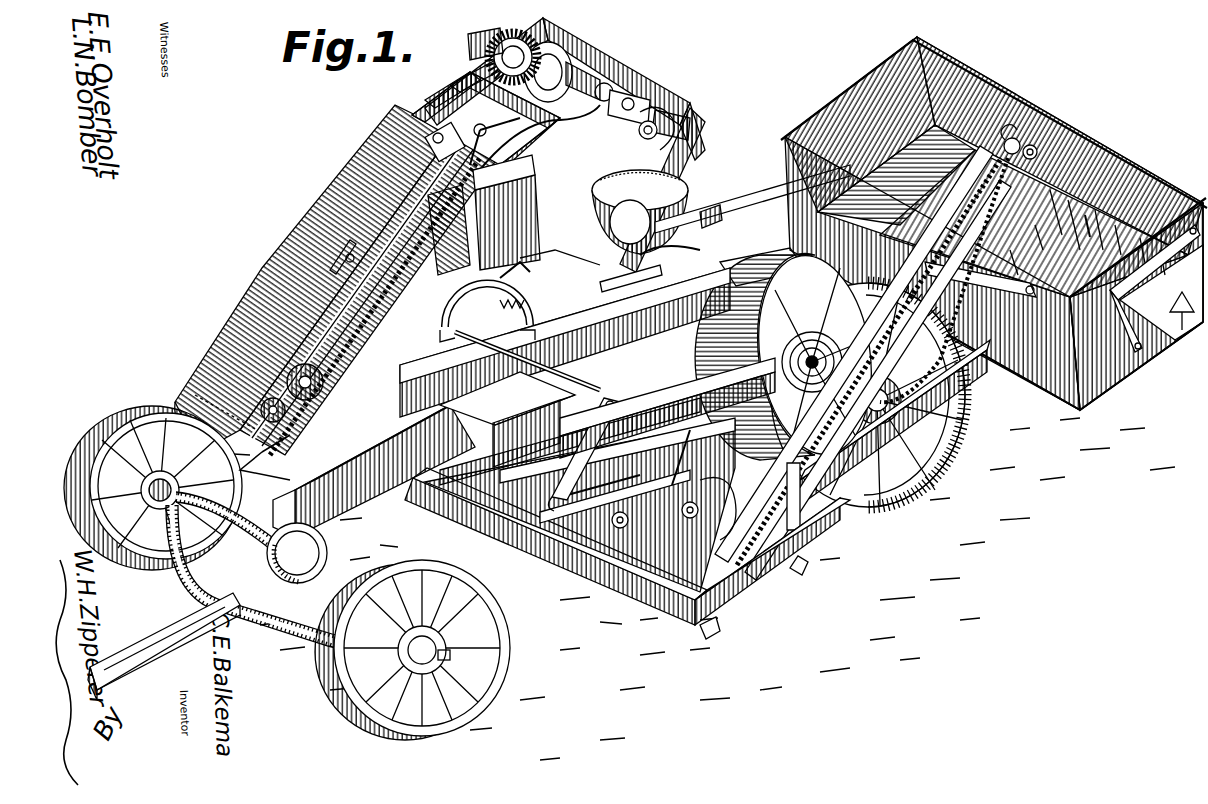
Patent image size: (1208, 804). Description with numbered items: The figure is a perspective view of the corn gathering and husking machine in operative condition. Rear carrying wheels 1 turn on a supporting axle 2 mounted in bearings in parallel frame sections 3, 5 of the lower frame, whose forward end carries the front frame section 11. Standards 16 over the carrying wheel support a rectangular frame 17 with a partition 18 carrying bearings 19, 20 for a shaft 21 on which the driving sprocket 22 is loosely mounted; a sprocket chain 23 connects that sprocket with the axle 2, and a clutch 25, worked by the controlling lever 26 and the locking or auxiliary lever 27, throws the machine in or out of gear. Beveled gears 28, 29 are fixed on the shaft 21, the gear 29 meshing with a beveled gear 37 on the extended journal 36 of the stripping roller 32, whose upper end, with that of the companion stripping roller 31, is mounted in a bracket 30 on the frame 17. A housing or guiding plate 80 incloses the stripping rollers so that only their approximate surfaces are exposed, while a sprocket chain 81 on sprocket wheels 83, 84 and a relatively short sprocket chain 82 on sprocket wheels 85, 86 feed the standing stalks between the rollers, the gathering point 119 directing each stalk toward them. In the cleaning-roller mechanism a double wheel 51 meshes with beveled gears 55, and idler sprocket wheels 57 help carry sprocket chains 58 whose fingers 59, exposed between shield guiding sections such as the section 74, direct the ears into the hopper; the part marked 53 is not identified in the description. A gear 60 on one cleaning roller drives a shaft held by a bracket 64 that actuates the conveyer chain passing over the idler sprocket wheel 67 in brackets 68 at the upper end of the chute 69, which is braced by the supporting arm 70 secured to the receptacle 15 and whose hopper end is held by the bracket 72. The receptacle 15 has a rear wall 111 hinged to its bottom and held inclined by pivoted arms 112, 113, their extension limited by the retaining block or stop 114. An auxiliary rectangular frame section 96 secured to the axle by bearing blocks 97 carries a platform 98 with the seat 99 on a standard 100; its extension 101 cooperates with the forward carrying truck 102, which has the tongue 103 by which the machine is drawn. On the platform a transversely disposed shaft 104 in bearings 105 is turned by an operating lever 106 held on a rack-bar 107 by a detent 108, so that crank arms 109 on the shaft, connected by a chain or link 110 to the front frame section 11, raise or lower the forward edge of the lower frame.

The rear carrying wheels 1 is at (789, 354).
The supporting axle 2 is at (617, 240).
The parallel frame section 3 is at (990, 370).
The parallel frame section 5 is at (756, 212).
The front frame section 11 is at (512, 532).
The receptacle 15 is at (852, 126).
The standards 16 is at (695, 162).
The rectangular frame 17 is at (627, 90).
The partition or intermediate section 18 is at (585, 62).
The bearing 19 is at (660, 126).
The bearing 20 is at (478, 40).
The shaft 21 is at (655, 108).
The driving sprocket 22 is at (632, 98).
The sprocket chain 23 is at (672, 112).
The clutch 25 is at (606, 82).
The controlling lever 26 is at (548, 162).
The locking or auxiliary lever 27 is at (506, 212).
The beveled gear 28 is at (552, 44).
The beveled gear 29 is at (515, 33).
The bracket 30 is at (486, 122).
The stripping roller 31 is at (395, 190).
The stripping roller 32 is at (400, 150).
The extended journal 36 is at (445, 98).
The beveled gear 37 is at (475, 80).
The double wheel 51 is at (628, 510).
The cross bar 53 is at (615, 491).
The beveled gears 55 is at (600, 489).
The idler sprocket wheels 57 is at (709, 508).
The sprocket chains 58 is at (580, 495).
The fingers or teeth 59 is at (617, 450).
The gear 60 is at (675, 612).
The bracket 64 is at (740, 630).
The idler sprocket wheel 67 is at (1022, 136).
The brackets 68 is at (1038, 150).
The chute 69 is at (915, 243).
The brace or supporting arm 70 is at (980, 283).
The bracket 72 is at (696, 628).
The guiding section 74 is at (680, 460).
The housing or guiding plate 80 is at (330, 270).
The sprocket chain 81 is at (355, 240).
The sprocket chain 82 is at (272, 458).
The sprocket wheel 83 is at (345, 255).
The sprocket wheel 84 is at (225, 367).
The sprocket wheel 85 is at (306, 402).
The sprocket wheel 86 is at (276, 424).
The rectangular frame section 96 is at (667, 408).
The bearing blocks or brackets 97 is at (670, 259).
The platform 98 is at (565, 342).
The seat 99 is at (640, 187).
The standard 100 is at (520, 306).
The extension 101 is at (374, 466).
The forward carrying truck 102 is at (268, 553).
The tongue or draft appliance 103 is at (158, 655).
The transversely disposed shaft 104 is at (536, 322).
The bearings 105 is at (552, 413).
The operating lever 106 is at (476, 292).
The rack-bar 107 is at (524, 288).
The detent 108 is at (631, 281).
The crank arms 109 is at (598, 454).
The chain or link 110 is at (540, 566).
The rear wall 111 is at (1100, 221).
The pivoted arm or member 112 is at (1130, 258).
The pivoted arm or member 113 is at (1096, 396).
The retaining block or stop 114 is at (1182, 330).
The gathering point 119 is at (164, 443).